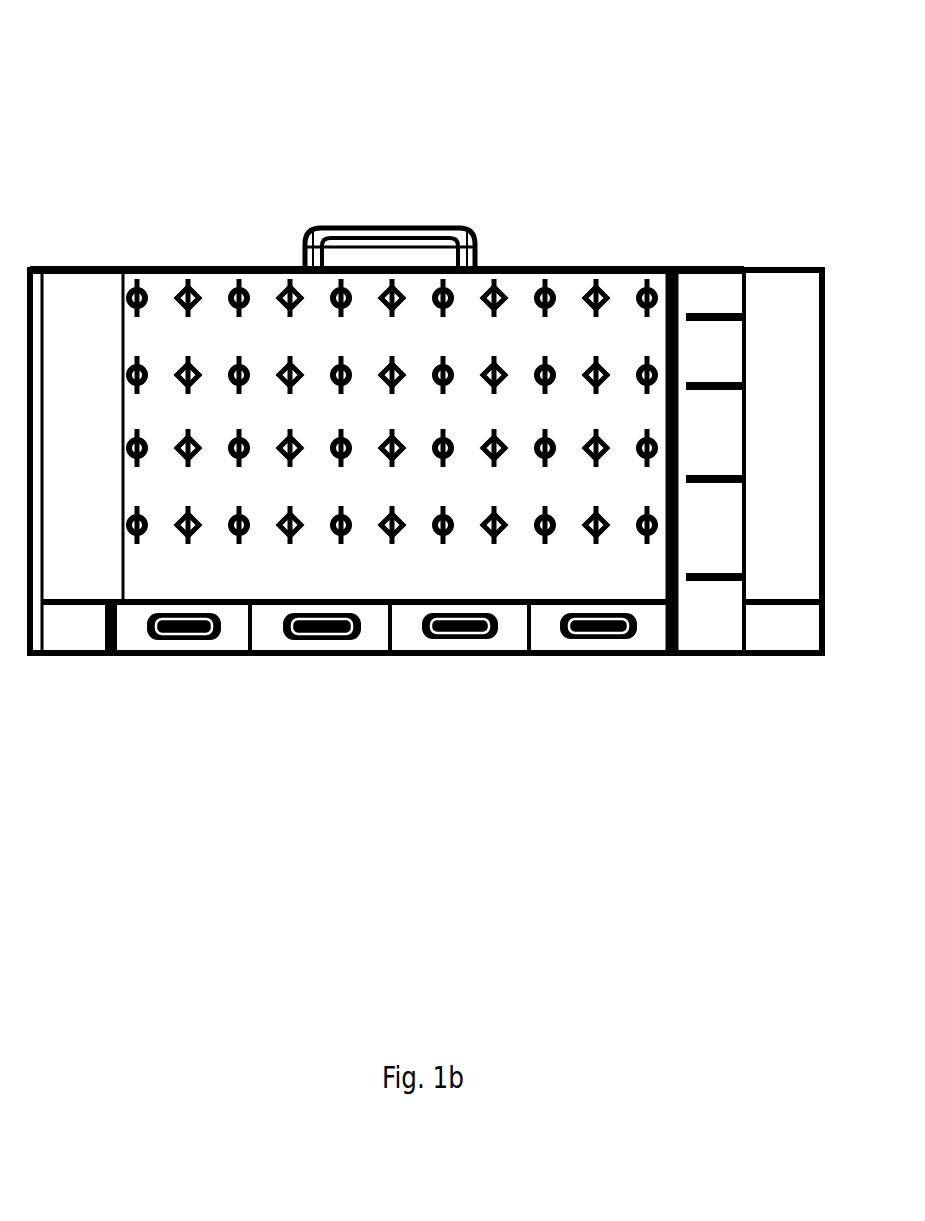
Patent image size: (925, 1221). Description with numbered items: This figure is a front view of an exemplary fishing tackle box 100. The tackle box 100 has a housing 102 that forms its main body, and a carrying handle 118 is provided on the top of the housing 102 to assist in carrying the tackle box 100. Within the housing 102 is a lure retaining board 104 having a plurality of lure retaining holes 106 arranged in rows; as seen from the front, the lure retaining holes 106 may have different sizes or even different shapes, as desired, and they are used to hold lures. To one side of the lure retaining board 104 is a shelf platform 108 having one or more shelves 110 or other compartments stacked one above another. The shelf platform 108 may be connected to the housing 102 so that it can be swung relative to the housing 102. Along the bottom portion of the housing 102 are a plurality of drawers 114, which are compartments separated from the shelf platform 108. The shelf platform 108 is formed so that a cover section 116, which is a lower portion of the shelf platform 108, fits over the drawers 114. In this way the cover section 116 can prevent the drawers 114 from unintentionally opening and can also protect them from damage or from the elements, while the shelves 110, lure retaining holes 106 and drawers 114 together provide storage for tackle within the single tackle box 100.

The fishing tackle box 100 is at (426, 332).
The housing 102 is at (287, 265).
The lure retaining board 104 is at (121, 578).
The lure retaining holes 106 is at (184, 540).
The shelf platform 108 is at (775, 570).
The shelves 110 is at (713, 306).
The drawers 114 is at (602, 642).
The cover section 116 is at (813, 618).
The carrying handle 118 is at (472, 236).